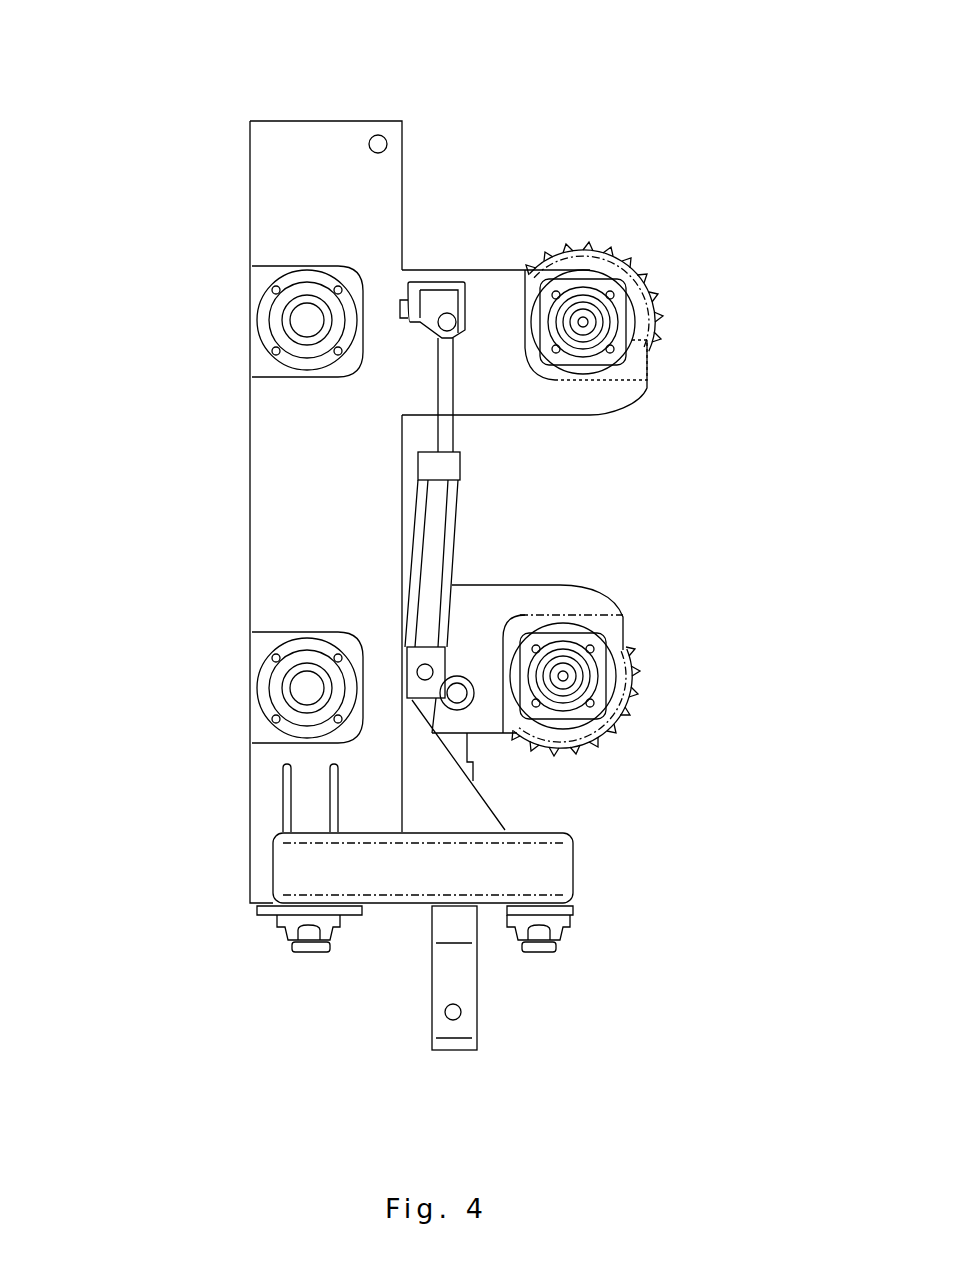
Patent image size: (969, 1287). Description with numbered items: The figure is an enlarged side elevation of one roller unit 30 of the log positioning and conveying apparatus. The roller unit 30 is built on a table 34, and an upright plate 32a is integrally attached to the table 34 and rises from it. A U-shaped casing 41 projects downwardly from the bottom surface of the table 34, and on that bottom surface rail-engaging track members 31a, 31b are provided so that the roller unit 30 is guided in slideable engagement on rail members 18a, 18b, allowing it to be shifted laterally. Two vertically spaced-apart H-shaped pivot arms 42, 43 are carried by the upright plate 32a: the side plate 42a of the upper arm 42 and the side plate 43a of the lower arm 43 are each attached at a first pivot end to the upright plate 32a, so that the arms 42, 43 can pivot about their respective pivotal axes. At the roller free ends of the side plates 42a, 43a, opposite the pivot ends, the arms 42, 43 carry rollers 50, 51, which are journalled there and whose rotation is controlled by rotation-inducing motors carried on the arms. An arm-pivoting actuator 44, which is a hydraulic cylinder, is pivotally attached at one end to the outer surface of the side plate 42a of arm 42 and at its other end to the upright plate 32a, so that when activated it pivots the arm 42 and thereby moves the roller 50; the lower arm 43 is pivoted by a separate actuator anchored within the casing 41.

The roller unit 30 is at (298, 145).
The upright plate 32a is at (290, 190).
The pivot arm 42 is at (495, 287).
The side plate 42a is at (602, 397).
The roller 50 is at (617, 275).
The arm-pivoting actuator 44 is at (438, 540).
The pivot arm 43 is at (515, 600).
The side plate 43a is at (578, 605).
The roller 51 is at (630, 692).
The table 34 is at (540, 868).
The rail-engaging track member 31a is at (556, 922).
The rail-engaging track member 31b is at (287, 921).
The rail member 18a is at (540, 950).
The rail member 18b is at (310, 945).
The U-shaped casing 41 is at (460, 987).